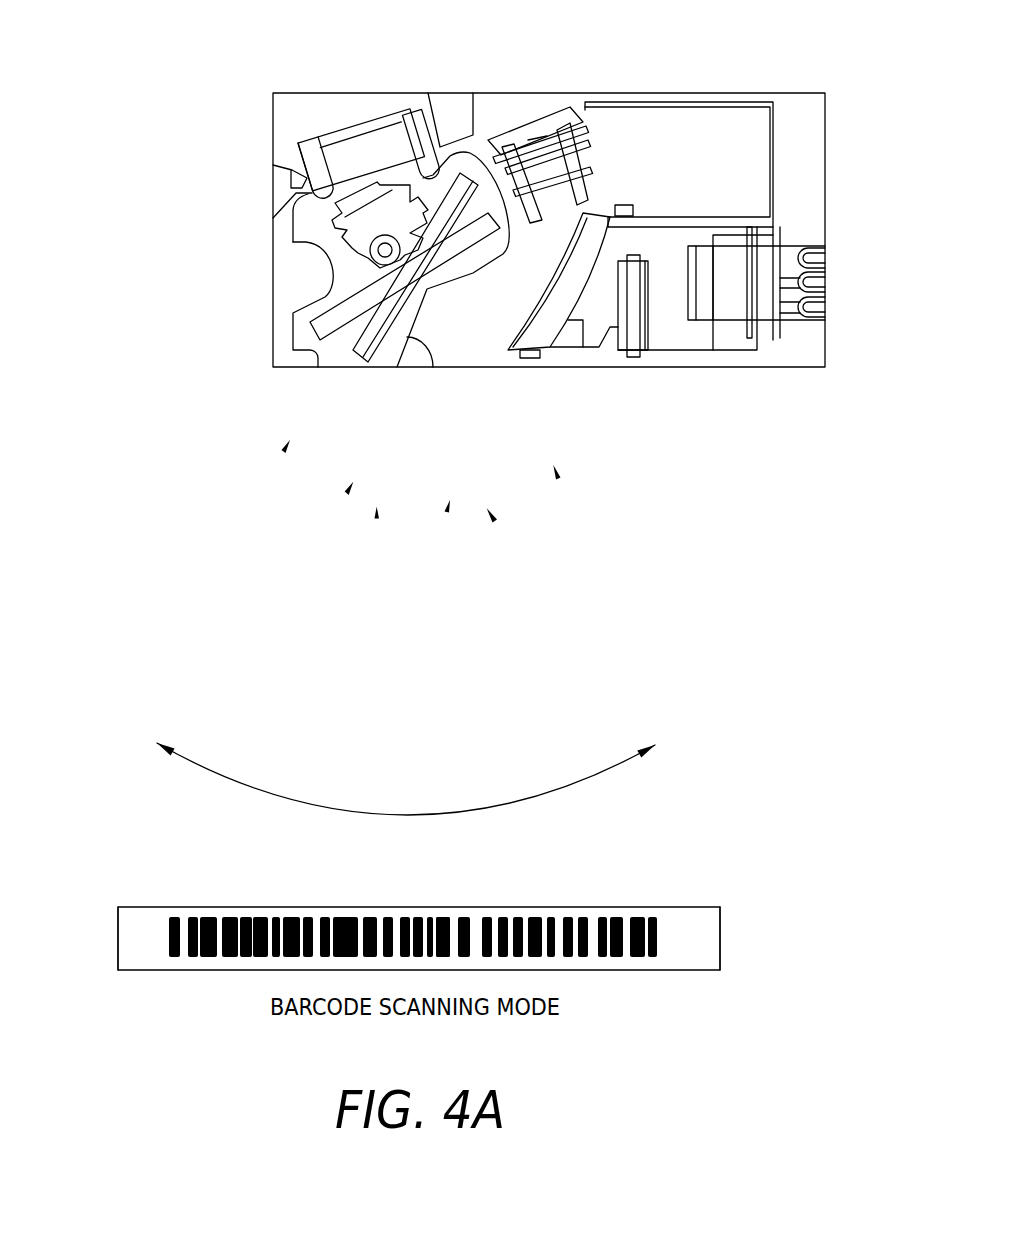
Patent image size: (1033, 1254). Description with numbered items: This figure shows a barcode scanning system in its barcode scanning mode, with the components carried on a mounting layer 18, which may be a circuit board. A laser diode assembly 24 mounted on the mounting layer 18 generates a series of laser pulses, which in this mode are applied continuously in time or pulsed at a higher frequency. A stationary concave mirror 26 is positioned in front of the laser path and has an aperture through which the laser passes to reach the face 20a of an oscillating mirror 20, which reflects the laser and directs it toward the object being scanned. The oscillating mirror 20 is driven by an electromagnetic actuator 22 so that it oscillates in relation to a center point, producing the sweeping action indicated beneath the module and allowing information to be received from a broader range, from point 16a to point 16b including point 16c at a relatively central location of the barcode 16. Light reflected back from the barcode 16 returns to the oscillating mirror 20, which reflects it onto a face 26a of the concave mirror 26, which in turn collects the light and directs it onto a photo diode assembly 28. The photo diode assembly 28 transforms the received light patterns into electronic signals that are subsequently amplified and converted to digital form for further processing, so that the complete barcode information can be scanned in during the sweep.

The barcode 16 is at (720, 948).
The point 16a is at (74, 913).
The point 16b is at (747, 913).
The point 16c is at (446, 916).
The mounting layer 18 is at (272, 122).
The oscillating mirror 20 is at (385, 251).
The face 20a is at (433, 367).
The electromagnetic actuator 22 is at (347, 147).
The laser diode assembly 24 is at (826, 309).
The stationary concave mirror 26 is at (597, 368).
The face 26a is at (562, 270).
The photo diode assembly 28 is at (532, 122).